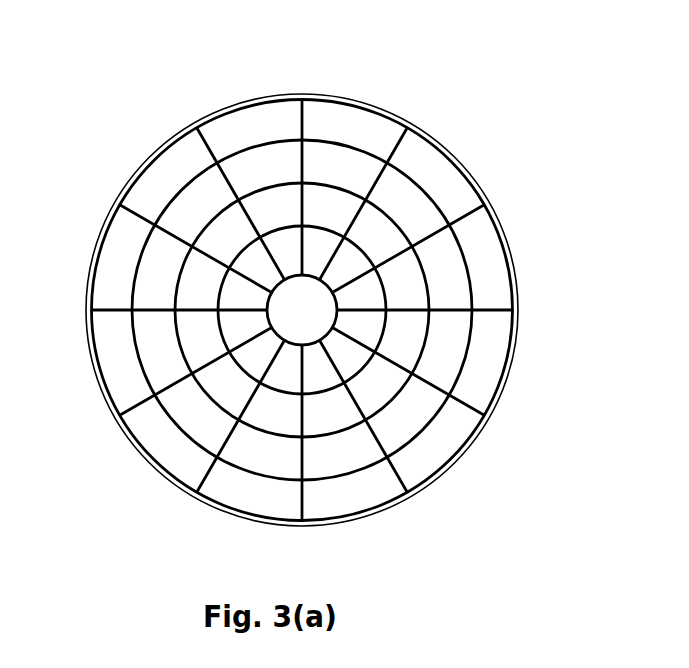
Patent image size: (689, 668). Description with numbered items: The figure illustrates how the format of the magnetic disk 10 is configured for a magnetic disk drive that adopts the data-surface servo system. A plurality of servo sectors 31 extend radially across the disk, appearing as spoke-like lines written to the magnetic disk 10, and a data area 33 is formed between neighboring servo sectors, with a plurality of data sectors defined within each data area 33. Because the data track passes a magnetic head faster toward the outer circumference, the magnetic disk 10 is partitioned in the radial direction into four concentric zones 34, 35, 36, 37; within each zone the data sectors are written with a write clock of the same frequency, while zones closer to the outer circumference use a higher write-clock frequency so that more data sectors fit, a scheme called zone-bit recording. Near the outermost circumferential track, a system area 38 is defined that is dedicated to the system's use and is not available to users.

The magnetic disk 10 is at (331, 288).
The servo sector 31 is at (312, 120).
The data area 33 is at (308, 82).
The zone 34 is at (487, 257).
The zone 35 is at (452, 343).
The zone 36 is at (390, 390).
The zone 37 is at (322, 380).
The system area 38 is at (152, 158).